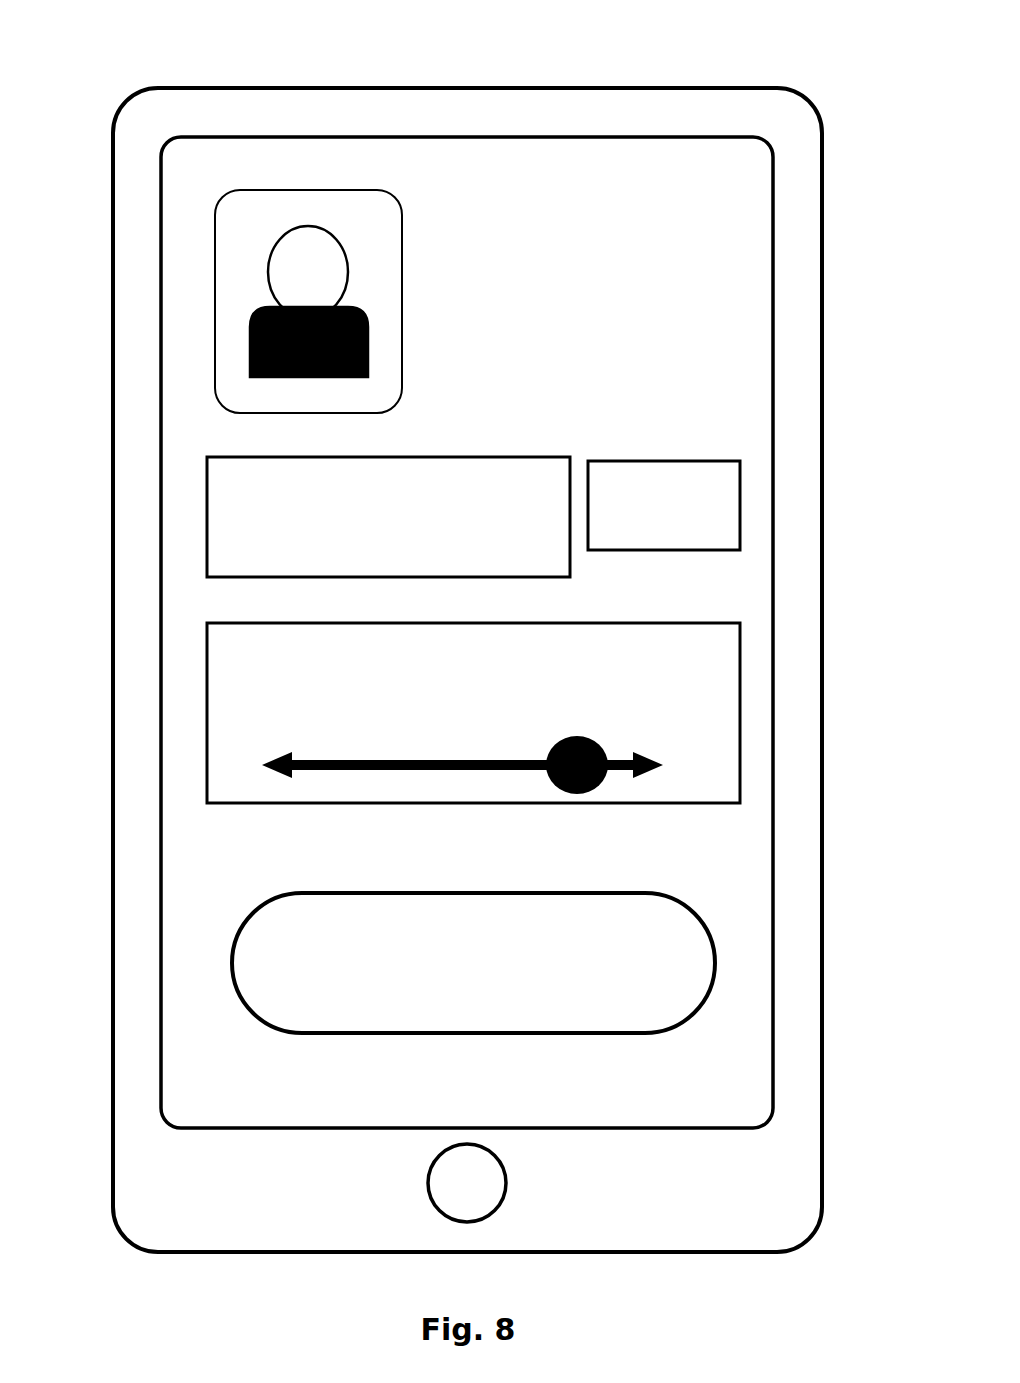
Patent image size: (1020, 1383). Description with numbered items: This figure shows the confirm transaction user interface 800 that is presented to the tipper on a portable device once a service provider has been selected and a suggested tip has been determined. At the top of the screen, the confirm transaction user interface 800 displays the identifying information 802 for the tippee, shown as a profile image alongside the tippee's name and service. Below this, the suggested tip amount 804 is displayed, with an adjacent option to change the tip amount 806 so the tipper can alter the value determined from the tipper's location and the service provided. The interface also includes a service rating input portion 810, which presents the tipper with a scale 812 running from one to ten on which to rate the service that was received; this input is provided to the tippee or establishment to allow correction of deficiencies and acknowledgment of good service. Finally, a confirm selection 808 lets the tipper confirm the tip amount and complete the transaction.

The confirm transaction user interface 800 is at (673, 225).
The identifying information 802 is at (250, 243).
The suggested tip amount 804 is at (250, 492).
The option to change the tip amount 806 is at (718, 485).
The confirm selection 808 is at (268, 938).
The service rating input portion 810 is at (675, 693).
The scale 812 is at (350, 758).